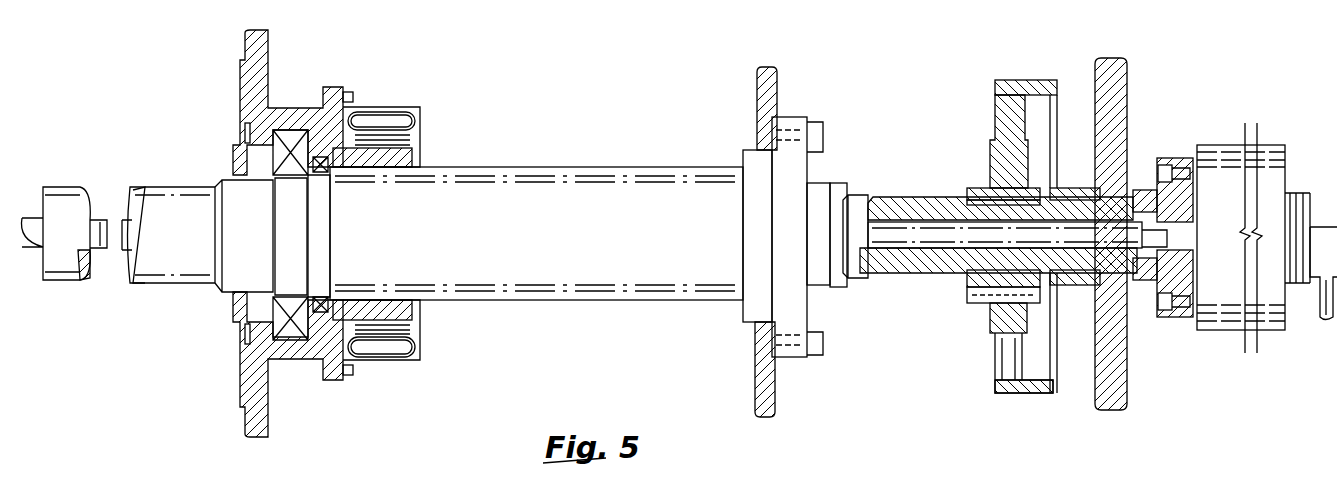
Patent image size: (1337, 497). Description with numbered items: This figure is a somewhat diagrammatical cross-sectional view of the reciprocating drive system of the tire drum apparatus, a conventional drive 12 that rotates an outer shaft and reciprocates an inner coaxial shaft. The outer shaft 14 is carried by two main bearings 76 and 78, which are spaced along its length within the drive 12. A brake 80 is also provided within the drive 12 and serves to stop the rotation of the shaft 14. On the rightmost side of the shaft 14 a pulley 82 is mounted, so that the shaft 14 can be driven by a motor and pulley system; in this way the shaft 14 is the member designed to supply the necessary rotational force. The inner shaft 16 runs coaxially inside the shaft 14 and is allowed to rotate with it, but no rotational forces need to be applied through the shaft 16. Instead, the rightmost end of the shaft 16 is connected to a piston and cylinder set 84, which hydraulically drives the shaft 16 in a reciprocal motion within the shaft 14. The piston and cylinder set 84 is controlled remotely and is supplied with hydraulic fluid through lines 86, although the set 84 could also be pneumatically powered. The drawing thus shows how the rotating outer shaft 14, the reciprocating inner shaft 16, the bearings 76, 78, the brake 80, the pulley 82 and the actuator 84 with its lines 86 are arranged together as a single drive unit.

The drive 12 is at (605, 103).
The shaft 14 is at (180, 207).
The shaft 16 is at (95, 222).
The main bearing 76 is at (288, 138).
The main bearing 78 is at (792, 118).
The brake 80 is at (418, 102).
The pulley 82 is at (995, 83).
The piston and cylinder set 84 is at (1267, 175).
The lines 86 is at (1318, 307).